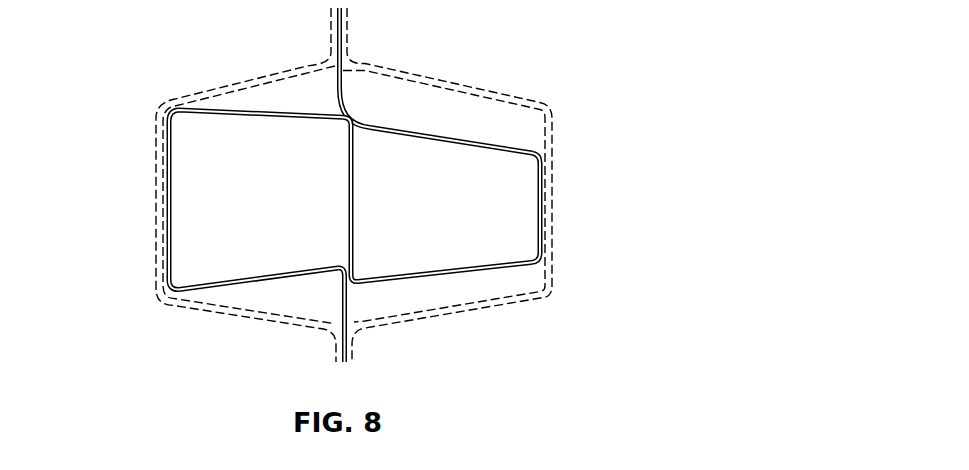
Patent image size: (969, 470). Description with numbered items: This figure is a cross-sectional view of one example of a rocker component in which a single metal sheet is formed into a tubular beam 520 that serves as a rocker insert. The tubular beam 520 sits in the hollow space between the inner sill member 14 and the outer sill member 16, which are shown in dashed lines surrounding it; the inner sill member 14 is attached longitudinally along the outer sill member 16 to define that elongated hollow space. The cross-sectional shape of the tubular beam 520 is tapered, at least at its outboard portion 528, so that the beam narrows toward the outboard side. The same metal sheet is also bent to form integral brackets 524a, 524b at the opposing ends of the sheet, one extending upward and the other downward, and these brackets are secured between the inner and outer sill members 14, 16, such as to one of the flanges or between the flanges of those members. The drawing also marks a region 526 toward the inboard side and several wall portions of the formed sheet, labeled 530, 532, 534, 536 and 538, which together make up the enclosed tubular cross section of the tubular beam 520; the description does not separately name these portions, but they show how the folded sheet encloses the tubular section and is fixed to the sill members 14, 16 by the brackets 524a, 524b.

The tubular beam 520 is at (337, 192).
The inner sill member 14 is at (218, 88).
The outer sill member 16 is at (512, 98).
The integral bracket 524a is at (322, 69).
The integral bracket 524b is at (340, 310).
The first chamber 526 is at (150, 296).
The outboard portion 528 is at (548, 277).
The inner wall 530 is at (427, 133).
The bottom wall 532 is at (227, 289).
The left side wall 534 is at (166, 213).
The right side wall 536 is at (542, 197).
The divider wall 538 is at (348, 197).